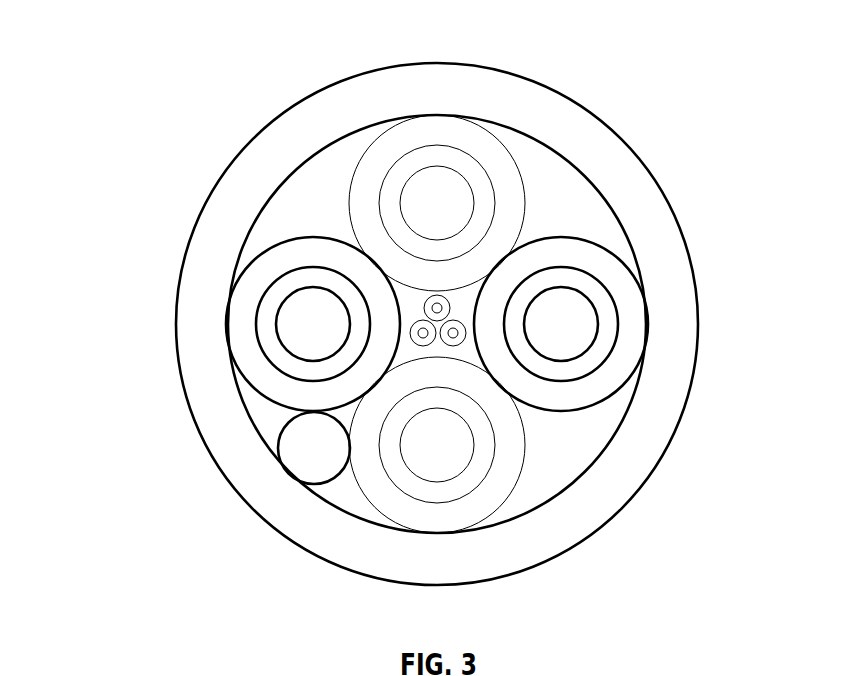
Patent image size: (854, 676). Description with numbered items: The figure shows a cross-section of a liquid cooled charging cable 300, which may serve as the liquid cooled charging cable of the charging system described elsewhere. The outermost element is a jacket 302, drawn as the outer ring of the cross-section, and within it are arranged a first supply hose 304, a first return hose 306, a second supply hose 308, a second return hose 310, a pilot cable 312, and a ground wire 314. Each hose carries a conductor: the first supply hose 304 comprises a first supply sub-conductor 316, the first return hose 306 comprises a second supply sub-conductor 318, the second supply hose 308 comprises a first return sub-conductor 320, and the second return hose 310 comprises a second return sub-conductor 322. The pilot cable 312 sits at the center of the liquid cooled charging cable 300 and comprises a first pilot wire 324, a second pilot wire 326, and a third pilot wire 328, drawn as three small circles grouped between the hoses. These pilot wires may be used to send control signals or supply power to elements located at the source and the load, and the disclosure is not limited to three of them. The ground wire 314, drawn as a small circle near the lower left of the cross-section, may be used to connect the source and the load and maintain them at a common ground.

The liquid cooled charging cable 300 is at (142, 36).
The jacket 302 is at (208, 396).
The first supply hose 304 is at (627, 343).
The first return hose 306 is at (240, 333).
The second supply hose 308 is at (382, 153).
The second return hose 310 is at (445, 520).
The pilot cable 312 is at (444, 315).
The ground wire 314 is at (318, 465).
The first supply sub-conductor 316 is at (583, 342).
The second supply sub-conductor 318 is at (335, 338).
The first return sub-conductor 320 is at (459, 212).
The second return sub-conductor 322 is at (459, 458).
The first pilot wire 324 is at (452, 307).
The second pilot wire 326 is at (416, 338).
The third pilot wire 328 is at (466, 333).